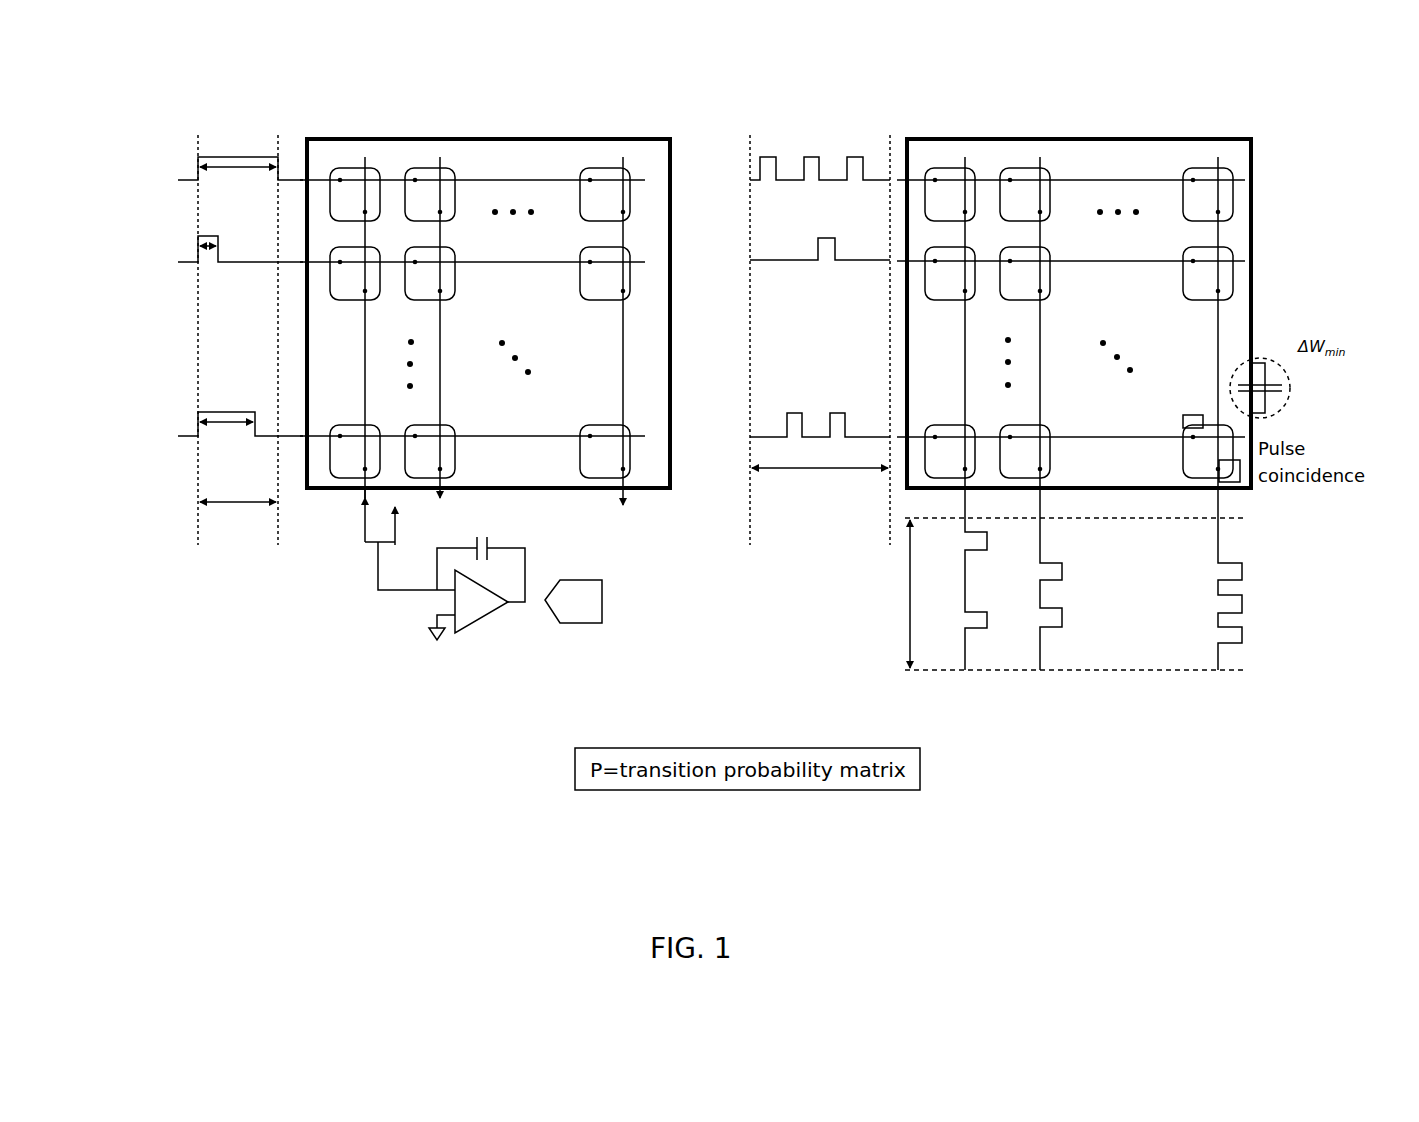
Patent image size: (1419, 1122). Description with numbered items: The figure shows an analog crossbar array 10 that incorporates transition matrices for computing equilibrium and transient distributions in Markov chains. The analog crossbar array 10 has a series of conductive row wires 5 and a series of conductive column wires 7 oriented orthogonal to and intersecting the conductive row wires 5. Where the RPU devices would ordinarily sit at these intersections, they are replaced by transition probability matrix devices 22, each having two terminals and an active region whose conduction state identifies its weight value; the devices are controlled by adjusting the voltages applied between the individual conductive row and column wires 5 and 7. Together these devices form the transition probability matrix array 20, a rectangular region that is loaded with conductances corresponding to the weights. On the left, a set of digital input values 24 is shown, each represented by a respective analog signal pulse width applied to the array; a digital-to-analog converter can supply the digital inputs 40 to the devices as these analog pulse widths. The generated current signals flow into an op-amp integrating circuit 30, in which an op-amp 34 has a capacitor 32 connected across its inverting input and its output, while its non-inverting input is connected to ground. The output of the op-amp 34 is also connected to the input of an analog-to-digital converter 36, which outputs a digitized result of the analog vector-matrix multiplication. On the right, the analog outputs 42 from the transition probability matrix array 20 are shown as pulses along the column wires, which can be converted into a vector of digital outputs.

The conductive row wires 5 is at (527, 180).
The conductive column wires 7 is at (623, 368).
The analog crossbar array 10 is at (592, 75).
The transition probability matrix array 20 is at (625, 137).
The transition probability matrix device 22 is at (328, 252).
The digital input values 24 is at (232, 140).
The op-amp integrating circuit 30 is at (400, 612).
The capacitor 32 is at (505, 512).
The op-amp 34 is at (478, 622).
The analog-to-digital converter 36 is at (602, 600).
The digital inputs 40 is at (812, 138).
The outputs 42 is at (1252, 597).